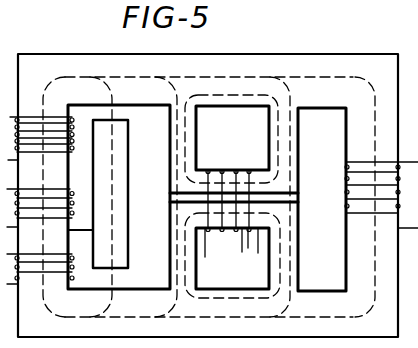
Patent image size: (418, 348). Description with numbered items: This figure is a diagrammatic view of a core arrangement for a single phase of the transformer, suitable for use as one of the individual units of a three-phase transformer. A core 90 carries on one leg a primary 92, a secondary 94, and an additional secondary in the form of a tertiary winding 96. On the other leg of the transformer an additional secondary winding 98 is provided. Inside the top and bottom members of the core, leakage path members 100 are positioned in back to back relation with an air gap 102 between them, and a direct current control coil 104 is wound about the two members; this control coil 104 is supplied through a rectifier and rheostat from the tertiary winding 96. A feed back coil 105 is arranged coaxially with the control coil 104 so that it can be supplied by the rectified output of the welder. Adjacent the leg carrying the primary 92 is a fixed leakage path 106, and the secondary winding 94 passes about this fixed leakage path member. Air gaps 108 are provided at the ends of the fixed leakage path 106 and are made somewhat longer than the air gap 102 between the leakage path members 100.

The core 90 is at (100, 62).
The primary 92 is at (28, 117).
The secondary 94 is at (27, 191).
The tertiary winding 96 is at (33, 278).
The additional secondary winding 98 is at (345, 172).
The leakage path members 100 is at (193, 141).
The air gap 102 is at (171, 197).
The direct current control coil 104 is at (238, 169).
The feed back coil 105 is at (254, 213).
The fixed leakage path 106 is at (128, 165).
The air gaps 108 is at (128, 114).